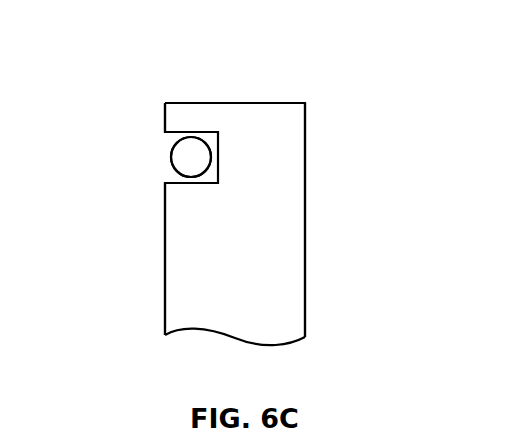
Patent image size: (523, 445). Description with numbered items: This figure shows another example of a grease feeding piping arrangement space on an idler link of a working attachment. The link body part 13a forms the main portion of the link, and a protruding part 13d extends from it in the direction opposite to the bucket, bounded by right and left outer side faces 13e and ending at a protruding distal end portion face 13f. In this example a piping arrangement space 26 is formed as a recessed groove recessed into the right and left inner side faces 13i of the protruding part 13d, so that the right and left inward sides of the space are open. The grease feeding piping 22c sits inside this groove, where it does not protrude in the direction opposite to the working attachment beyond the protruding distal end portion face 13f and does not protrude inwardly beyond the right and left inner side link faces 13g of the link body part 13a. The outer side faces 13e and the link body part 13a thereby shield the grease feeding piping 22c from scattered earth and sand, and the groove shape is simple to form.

The link body part 13a is at (285, 302).
The protruding part 13d is at (273, 141).
The right and left outer side faces 13e is at (306, 135).
The protruding distal end portion face 13f is at (221, 102).
The right and left inner side link faces 13g is at (164, 257).
The right and left inner side faces 13i is at (164, 115).
The piping arrangement space 26 is at (168, 142).
The grease feeding piping 22c is at (191, 157).